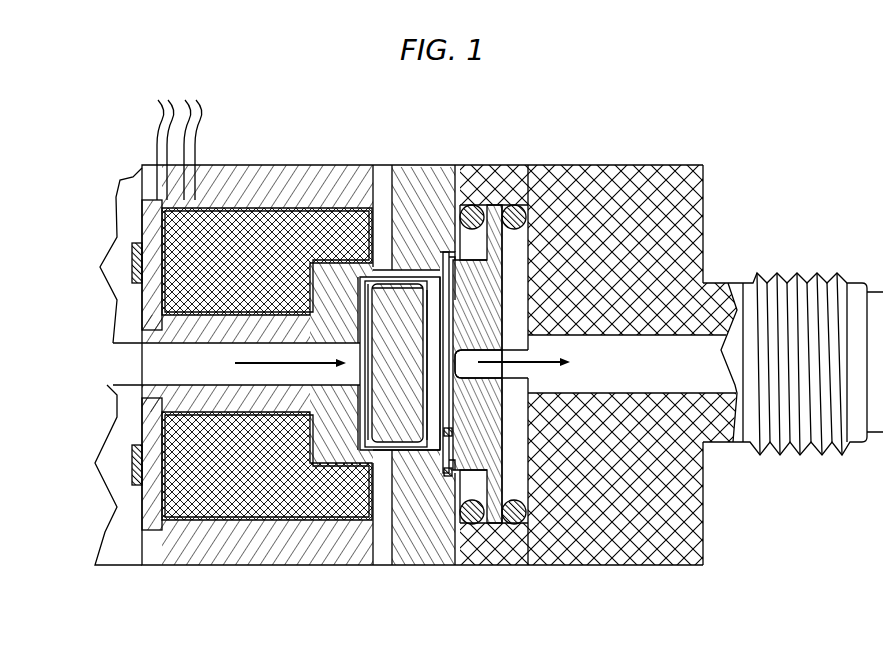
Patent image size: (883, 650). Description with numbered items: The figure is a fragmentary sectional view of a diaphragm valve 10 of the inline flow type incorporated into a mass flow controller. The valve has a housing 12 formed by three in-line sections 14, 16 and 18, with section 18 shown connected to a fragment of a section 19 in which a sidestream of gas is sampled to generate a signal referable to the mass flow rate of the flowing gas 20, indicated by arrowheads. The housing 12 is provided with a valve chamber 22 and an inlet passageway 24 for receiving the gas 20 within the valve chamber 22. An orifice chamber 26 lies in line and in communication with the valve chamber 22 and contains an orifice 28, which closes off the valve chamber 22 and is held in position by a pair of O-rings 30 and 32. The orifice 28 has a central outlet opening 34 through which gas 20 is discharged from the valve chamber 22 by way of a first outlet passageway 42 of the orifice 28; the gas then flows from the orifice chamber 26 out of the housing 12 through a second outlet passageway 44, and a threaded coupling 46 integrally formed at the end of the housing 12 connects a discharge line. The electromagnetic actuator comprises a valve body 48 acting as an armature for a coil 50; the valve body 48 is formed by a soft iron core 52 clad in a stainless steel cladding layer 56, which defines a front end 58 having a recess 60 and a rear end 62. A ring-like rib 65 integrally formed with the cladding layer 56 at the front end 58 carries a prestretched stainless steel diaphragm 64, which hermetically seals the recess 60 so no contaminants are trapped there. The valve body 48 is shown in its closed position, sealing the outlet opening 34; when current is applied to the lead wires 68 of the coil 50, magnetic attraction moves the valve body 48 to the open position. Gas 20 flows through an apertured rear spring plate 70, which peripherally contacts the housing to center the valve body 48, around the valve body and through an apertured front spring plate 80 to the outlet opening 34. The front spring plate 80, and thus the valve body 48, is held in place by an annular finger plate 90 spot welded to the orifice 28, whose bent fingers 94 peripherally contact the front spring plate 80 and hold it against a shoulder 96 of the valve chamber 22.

The diaphragm valve 10 is at (624, 72).
The housing 12 is at (401, 150).
The housing section 14 is at (643, 162).
The housing section 16 is at (432, 156).
The housing section 18 is at (269, 156).
The section 19 is at (118, 183).
The flowing gas 20 is at (190, 372).
The valve chamber 22 is at (422, 470).
The inlet passageway 24 is at (268, 380).
The orifice chamber 26 is at (562, 455).
The orifice 28 is at (510, 251).
The O-ring 30 is at (492, 207).
The O-ring 32 is at (514, 232).
The central outlet opening 34 is at (460, 378).
The first outlet passageway 42 is at (612, 497).
The second outlet passageway 44 is at (750, 272).
The threaded coupling 46 is at (812, 276).
The valve body 48 is at (407, 270).
The coil 50 is at (224, 218).
The soft iron core 52 is at (372, 415).
The cladding layer 56 is at (405, 462).
The front end 58 is at (453, 300).
The recess 60 is at (357, 347).
The rear end 62 is at (358, 277).
The diaphragm 64 is at (357, 347).
The ring-like rib 65 is at (432, 445).
The lead wires 68 is at (157, 113).
The rear spring plate 70 is at (325, 432).
The front spring plate 80 is at (453, 478).
The annular finger plate 90 is at (522, 202).
The fingers 94 is at (520, 240).
The shoulder 96 is at (441, 274).